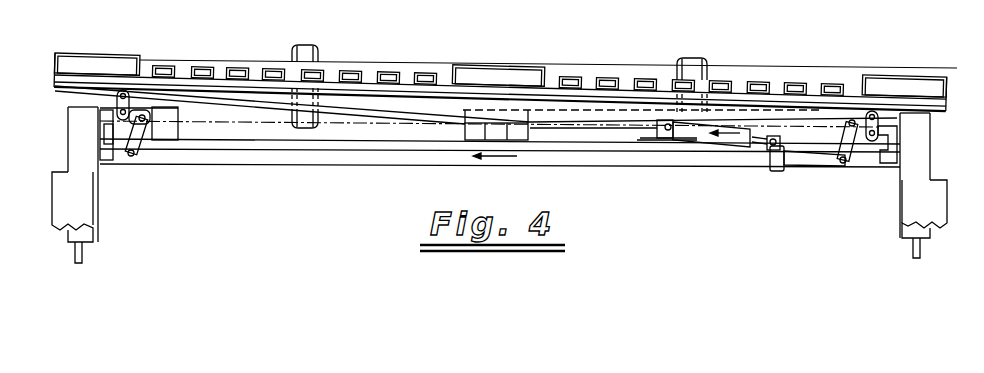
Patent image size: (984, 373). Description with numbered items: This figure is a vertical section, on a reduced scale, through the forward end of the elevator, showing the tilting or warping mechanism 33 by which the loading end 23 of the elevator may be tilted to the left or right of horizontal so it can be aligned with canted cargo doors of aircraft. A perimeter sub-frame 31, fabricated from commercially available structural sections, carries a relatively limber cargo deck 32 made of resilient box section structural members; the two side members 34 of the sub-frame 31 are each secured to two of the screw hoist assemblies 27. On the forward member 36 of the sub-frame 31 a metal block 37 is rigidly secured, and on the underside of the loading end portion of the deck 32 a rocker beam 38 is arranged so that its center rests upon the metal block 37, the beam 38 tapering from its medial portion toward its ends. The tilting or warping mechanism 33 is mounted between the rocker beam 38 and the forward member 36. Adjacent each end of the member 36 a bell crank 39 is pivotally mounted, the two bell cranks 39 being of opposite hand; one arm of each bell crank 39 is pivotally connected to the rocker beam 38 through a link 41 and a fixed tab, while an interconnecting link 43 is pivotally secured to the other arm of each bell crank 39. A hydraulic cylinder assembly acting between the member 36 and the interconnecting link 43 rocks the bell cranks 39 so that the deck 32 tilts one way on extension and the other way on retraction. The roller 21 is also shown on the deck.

The roller 21 is at (306, 44).
The loading end 23 is at (820, 70).
The screw hoist assemblies 27 is at (68, 158).
The perimeter sub-frame 31 is at (233, 122).
The cargo deck 32 is at (201, 63).
The tilting or warping mechanism 33 is at (740, 145).
The side members 34 is at (103, 152).
The forward member 36 is at (557, 130).
The metal block 37 is at (493, 136).
The rocker beam 38 is at (365, 100).
The bell crank 39 is at (140, 143).
The link 41 is at (116, 97).
The interconnecting link 43 is at (536, 160).